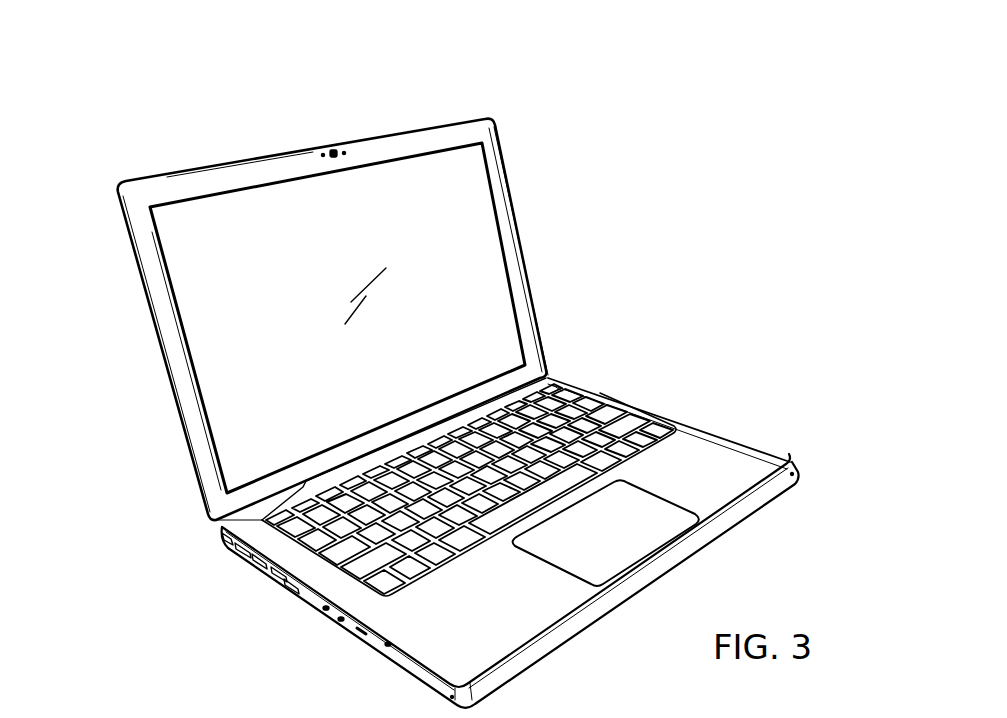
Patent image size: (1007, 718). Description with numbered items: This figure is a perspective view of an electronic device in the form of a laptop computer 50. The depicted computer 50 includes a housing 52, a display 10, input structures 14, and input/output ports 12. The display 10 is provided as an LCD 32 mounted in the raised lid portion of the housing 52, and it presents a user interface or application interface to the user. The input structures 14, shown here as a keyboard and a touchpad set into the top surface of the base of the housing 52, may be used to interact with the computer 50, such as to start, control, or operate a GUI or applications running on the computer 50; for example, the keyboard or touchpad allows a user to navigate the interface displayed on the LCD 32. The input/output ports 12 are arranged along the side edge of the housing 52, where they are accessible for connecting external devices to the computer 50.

The display 10 is at (458, 389).
The laptop computer 50 is at (281, 100).
The LCD 32 is at (478, 166).
The housing 52 is at (710, 430).
The input structures 14 is at (601, 419).
The input/output ports 12 is at (283, 592).